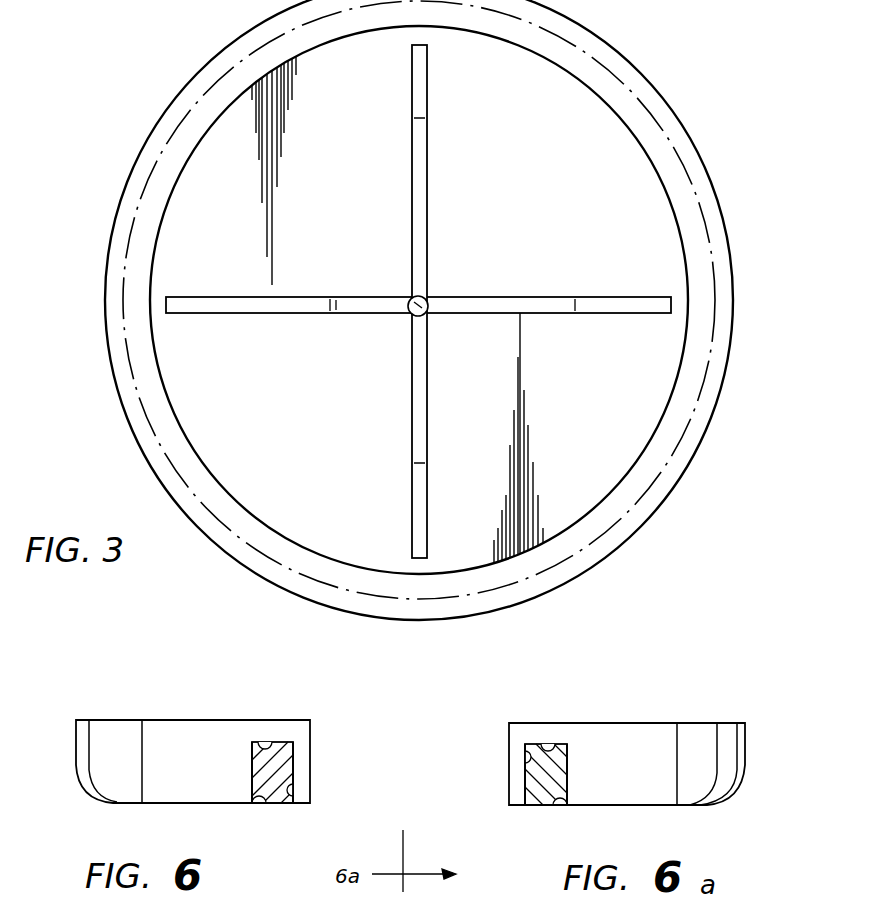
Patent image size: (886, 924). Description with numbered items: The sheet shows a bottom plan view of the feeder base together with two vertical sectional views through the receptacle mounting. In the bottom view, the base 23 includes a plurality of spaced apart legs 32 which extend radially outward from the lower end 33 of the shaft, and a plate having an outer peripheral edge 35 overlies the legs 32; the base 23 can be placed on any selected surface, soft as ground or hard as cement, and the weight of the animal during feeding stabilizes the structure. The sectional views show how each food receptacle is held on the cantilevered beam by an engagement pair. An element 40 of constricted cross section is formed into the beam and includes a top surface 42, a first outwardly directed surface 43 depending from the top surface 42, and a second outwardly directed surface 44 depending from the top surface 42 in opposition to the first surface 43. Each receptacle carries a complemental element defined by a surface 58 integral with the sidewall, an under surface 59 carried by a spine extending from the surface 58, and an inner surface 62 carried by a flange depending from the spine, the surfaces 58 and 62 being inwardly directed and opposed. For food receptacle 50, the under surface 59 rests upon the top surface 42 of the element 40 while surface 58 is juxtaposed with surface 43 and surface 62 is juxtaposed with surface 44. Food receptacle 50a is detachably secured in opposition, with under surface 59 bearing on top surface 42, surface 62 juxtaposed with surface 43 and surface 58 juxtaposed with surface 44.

In FIG. 3, the base 23 is at (725, 381).
In FIG. 3, the outer peripheral edge 35 is at (673, 493).
In FIG. 3, the legs 32 is at (473, 297).
In FIG. 3, the lower end 33 is at (423, 310).
In FIG. 6, the food receptacle 50 is at (182, 720).
In FIG. 6A, the food receptacle 50a is at (745, 760).
In FIG. 6, the top surface 42 is at (275, 742).
In FIG. 6A, the top surface 42 is at (560, 744).
In FIG. 6, the under surface 59 is at (265, 742).
In FIG. 6A, the under surface 59 is at (540, 744).
In FIG. 6, the surface 58 is at (262, 803).
In FIG. 6A, the surface 58 is at (555, 805).
In FIG. 6, the inner surface 62 is at (284, 795).
In FIG. 6A, the inner surface 62 is at (527, 751).
In FIG. 6, the first outwardly directed surface 43 is at (252, 765).
In FIG. 6A, the first outwardly directed surface 43 is at (525, 775).
In FIG. 6, the second outwardly directed surface 44 is at (293, 768).
In FIG. 6A, the second outwardly directed surface 44 is at (567, 780).
In FIG. 6, the element 40 is at (270, 803).
In FIG. 6A, the element 40 is at (545, 805).